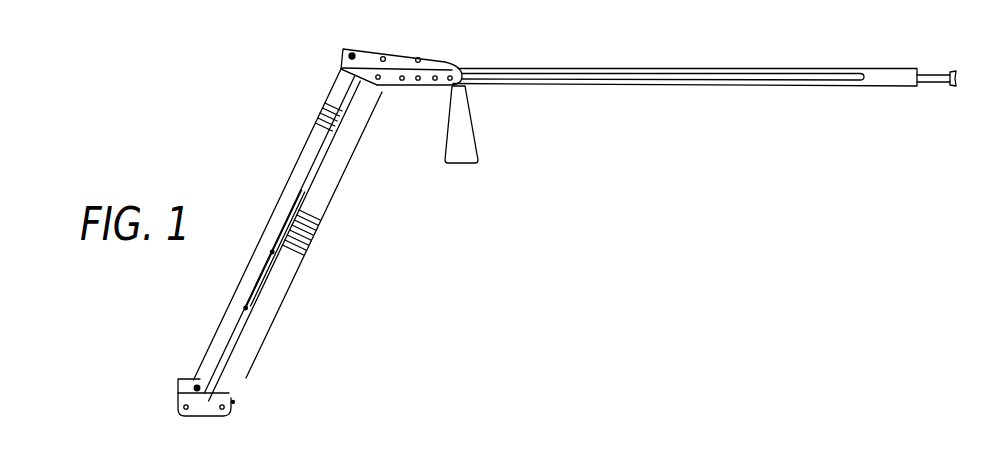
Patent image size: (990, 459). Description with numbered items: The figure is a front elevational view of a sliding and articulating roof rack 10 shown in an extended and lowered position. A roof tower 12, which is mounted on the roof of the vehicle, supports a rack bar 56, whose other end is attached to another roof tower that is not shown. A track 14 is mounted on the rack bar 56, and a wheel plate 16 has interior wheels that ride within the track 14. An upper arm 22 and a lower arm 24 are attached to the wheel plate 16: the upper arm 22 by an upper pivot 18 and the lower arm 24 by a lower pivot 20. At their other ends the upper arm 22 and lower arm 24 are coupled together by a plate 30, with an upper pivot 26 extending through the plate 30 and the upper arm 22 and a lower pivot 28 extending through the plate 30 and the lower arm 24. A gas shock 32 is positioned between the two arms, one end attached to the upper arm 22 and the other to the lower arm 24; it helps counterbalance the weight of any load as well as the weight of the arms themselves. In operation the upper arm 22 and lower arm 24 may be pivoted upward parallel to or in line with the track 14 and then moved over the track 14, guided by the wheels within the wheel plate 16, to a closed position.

The sliding and articulating roof rack 10 is at (710, 102).
The roof tower 12 is at (462, 133).
The track 14 is at (813, 88).
The wheel plate 16 is at (411, 53).
The upper pivot 18 is at (343, 52).
The lower pivot 20 is at (381, 97).
The upper arm 22 is at (302, 151).
The lower arm 24 is at (330, 198).
The upper pivot 26 is at (198, 388).
The lower pivot 28 is at (233, 402).
The plate 30 is at (207, 410).
The gas shock 32 is at (288, 257).
The rack bar 56 is at (940, 86).